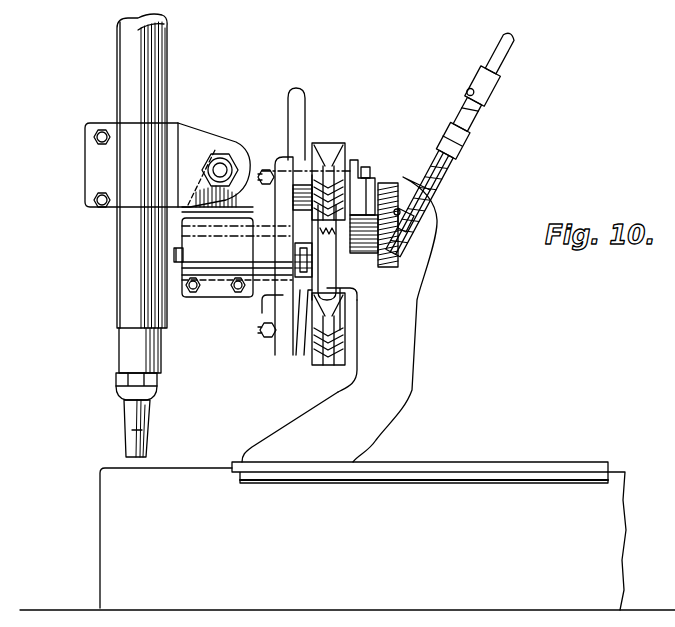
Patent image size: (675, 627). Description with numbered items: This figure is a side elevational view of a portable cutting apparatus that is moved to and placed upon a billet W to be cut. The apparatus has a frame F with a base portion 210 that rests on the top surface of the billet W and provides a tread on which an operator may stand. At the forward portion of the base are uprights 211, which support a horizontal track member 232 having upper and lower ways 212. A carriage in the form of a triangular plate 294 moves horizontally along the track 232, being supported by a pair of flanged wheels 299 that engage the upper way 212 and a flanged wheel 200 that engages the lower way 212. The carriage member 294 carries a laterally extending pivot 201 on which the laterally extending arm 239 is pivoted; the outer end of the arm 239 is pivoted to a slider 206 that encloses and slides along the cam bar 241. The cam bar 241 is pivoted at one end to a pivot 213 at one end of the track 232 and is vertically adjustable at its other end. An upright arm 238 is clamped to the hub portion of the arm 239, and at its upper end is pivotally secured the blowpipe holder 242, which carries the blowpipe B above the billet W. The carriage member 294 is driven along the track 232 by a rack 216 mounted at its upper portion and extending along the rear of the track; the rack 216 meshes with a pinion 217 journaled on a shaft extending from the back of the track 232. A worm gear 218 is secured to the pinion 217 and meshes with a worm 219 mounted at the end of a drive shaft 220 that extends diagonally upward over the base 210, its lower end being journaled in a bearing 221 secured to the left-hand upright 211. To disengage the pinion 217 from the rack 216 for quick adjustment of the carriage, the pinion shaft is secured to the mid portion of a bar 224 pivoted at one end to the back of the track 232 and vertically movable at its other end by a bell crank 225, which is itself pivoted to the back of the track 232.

The blowpipe B is at (118, 268).
The billet W is at (112, 526).
The frame F is at (284, 422).
The flanged wheel 200 is at (321, 360).
The pivot 201 is at (177, 263).
The slider 206 is at (266, 338).
The base portion 210 is at (497, 470).
The uprights 211 is at (393, 355).
The ways 212 is at (350, 291).
The pivot 213 is at (300, 258).
The rack 216 is at (369, 205).
The pinion 217 is at (400, 248).
The worm gear 218 is at (390, 188).
The worm 219 is at (410, 233).
The drive shaft 220 is at (447, 160).
The bearing 221 is at (425, 201).
The bar 224 is at (347, 252).
The bell crank 225 is at (355, 178).
The track member 232 is at (328, 282).
The upright arm 238 is at (190, 232).
The arm 239 is at (262, 235).
The cam bar 241 is at (305, 283).
The blowpipe holder 242 is at (130, 160).
The carriage member 294 is at (282, 295).
The flanged wheels 299 is at (323, 160).